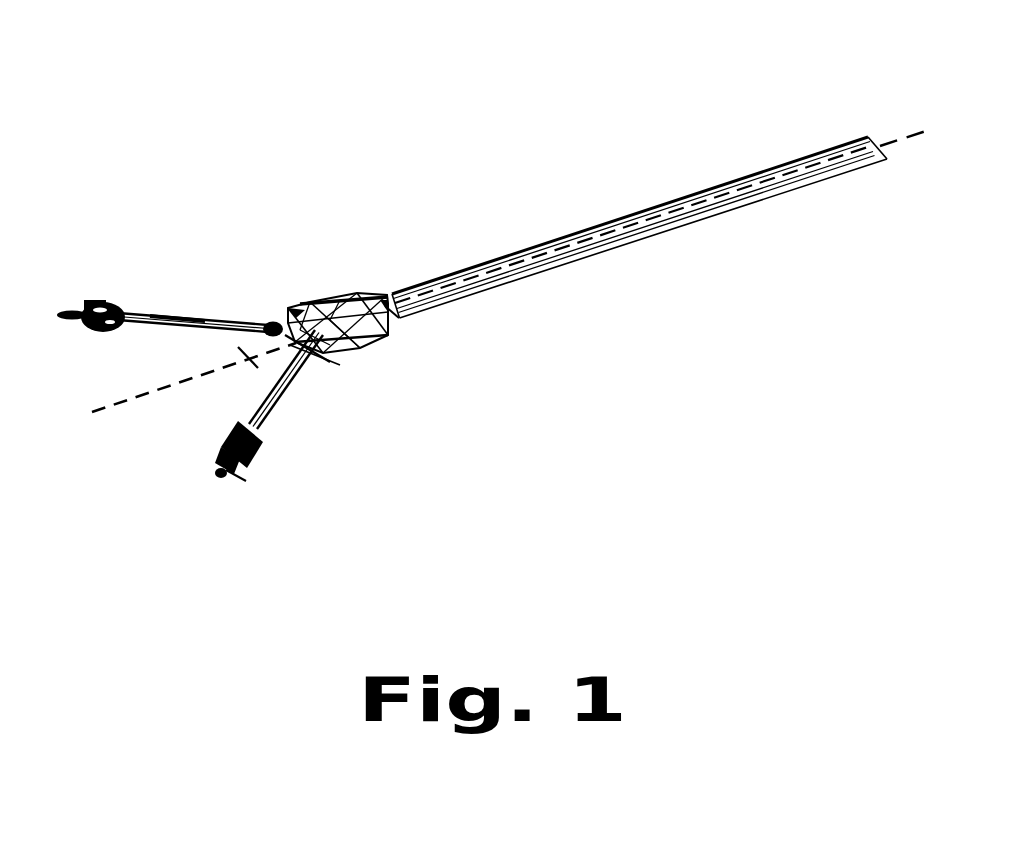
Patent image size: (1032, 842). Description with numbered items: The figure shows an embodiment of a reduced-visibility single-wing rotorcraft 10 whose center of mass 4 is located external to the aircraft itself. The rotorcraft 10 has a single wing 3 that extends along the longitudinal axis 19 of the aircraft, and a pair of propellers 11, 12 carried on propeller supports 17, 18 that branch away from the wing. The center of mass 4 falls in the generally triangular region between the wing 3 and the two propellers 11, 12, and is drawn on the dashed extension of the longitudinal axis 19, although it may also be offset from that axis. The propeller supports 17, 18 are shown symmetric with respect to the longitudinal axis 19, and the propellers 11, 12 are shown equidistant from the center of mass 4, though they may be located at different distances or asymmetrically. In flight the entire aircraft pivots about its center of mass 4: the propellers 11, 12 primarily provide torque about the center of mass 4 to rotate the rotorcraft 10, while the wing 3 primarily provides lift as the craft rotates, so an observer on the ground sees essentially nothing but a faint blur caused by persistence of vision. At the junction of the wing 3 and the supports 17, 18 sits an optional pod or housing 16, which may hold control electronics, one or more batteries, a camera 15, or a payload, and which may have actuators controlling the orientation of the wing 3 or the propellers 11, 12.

The wing 3 is at (538, 257).
The center of mass 4 is at (248, 352).
The reduced-visibility rotorcraft 10 is at (163, 139).
The propeller 11 is at (236, 469).
The propeller 12 is at (79, 305).
The camera 15 is at (276, 322).
The pod or housing 16 is at (328, 294).
The propeller support 17 is at (165, 318).
The propeller support 18 is at (277, 398).
The longitudinal axis 19 is at (890, 145).